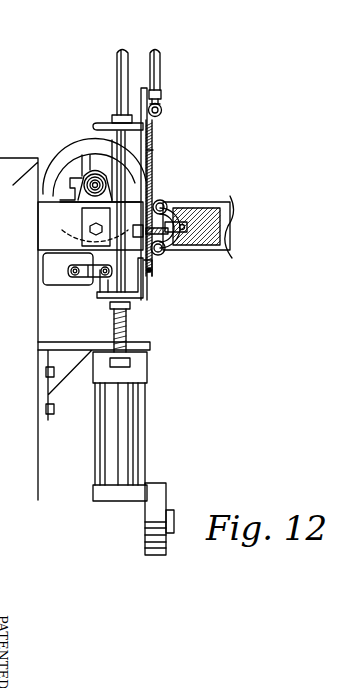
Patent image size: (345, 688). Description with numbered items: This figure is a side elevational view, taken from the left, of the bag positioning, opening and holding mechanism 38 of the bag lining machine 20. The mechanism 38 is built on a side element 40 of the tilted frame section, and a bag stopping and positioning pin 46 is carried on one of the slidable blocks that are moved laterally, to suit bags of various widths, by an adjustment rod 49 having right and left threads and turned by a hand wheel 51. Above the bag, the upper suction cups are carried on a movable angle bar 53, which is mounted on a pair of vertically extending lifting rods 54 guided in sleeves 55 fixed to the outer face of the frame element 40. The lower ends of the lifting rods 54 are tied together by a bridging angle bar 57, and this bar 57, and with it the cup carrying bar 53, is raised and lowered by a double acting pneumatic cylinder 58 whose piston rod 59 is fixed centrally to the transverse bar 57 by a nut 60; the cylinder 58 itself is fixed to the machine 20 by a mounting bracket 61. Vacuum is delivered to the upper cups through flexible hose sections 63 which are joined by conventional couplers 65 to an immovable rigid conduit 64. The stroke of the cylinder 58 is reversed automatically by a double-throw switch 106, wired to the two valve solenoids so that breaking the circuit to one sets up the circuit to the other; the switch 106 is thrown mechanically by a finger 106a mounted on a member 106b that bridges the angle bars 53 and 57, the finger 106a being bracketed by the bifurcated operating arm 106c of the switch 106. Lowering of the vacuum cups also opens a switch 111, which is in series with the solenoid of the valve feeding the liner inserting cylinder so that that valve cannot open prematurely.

The bag lining machine 20 is at (19, 329).
The mechanism 38 is at (197, 131).
The side element 40 is at (232, 224).
The bag stopping and positioning pin 46 is at (88, 172).
The adjustment rod 49 is at (46, 204).
The hand wheel 51 is at (62, 151).
The angle bar 53 is at (110, 121).
The lifting rod 54 is at (128, 156).
The sleeve 55 is at (154, 191).
The bridging angle bar 57 is at (145, 286).
The double acting pneumatic cylinder 58 is at (128, 419).
The piston rod 59 is at (110, 313).
The nut 60 is at (150, 276).
The mounting bracket 61 is at (146, 339).
The flexible hose section 63 is at (118, 66).
The rigid conduit 64 is at (162, 112).
The coupler 65 is at (171, 89).
The double-throw switch 106 is at (231, 207).
The finger 106a is at (180, 231).
The member 106b is at (152, 163).
The bifurcated operating arm 106c is at (187, 204).
The switch 111 is at (54, 265).